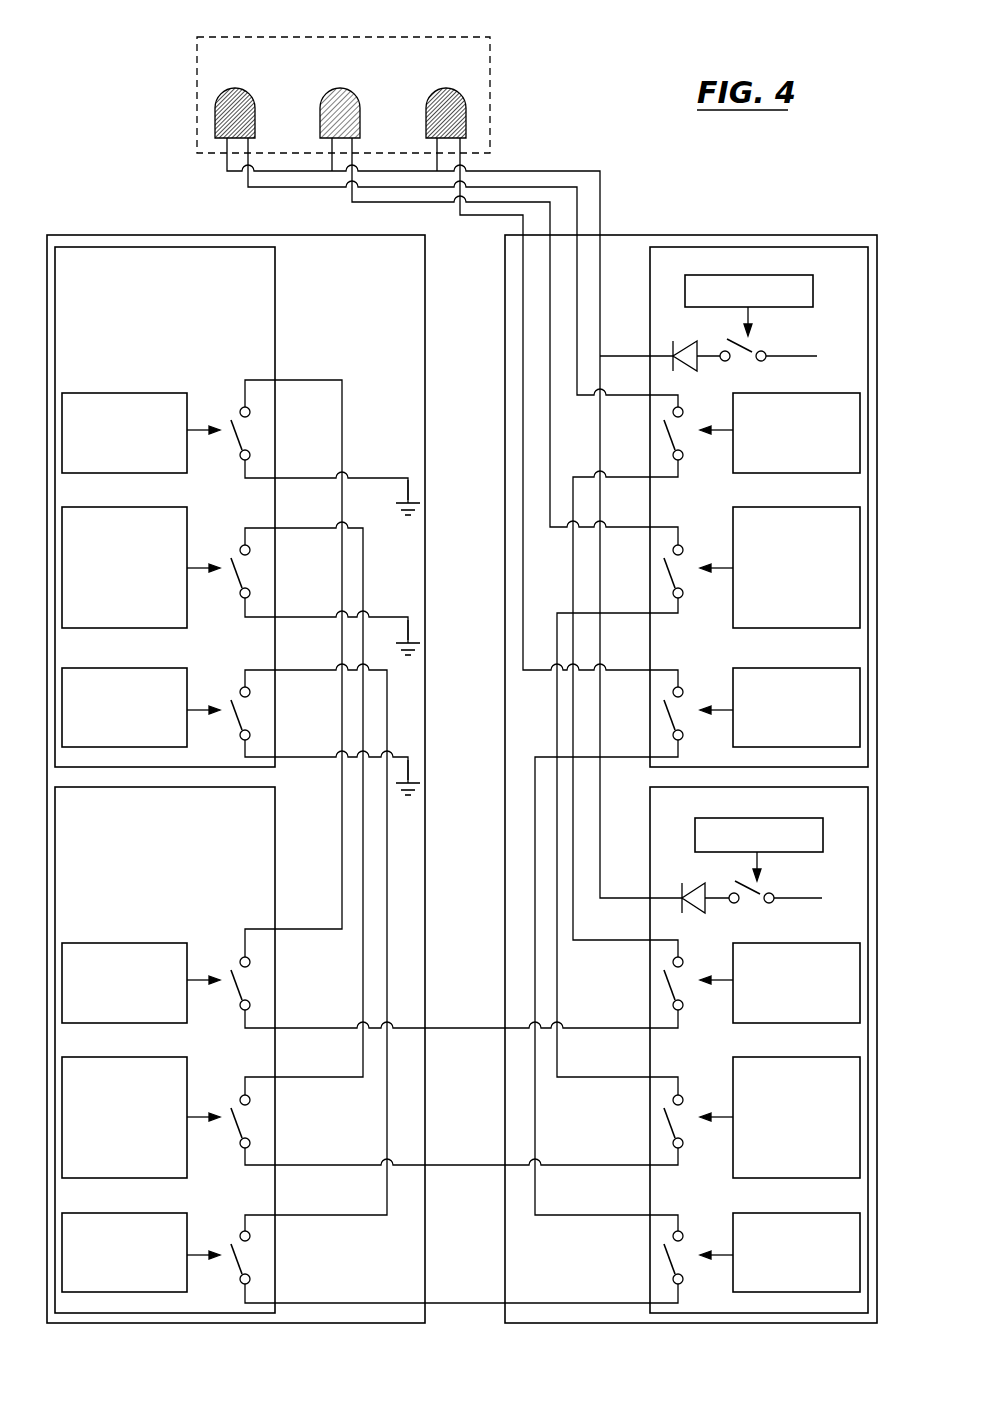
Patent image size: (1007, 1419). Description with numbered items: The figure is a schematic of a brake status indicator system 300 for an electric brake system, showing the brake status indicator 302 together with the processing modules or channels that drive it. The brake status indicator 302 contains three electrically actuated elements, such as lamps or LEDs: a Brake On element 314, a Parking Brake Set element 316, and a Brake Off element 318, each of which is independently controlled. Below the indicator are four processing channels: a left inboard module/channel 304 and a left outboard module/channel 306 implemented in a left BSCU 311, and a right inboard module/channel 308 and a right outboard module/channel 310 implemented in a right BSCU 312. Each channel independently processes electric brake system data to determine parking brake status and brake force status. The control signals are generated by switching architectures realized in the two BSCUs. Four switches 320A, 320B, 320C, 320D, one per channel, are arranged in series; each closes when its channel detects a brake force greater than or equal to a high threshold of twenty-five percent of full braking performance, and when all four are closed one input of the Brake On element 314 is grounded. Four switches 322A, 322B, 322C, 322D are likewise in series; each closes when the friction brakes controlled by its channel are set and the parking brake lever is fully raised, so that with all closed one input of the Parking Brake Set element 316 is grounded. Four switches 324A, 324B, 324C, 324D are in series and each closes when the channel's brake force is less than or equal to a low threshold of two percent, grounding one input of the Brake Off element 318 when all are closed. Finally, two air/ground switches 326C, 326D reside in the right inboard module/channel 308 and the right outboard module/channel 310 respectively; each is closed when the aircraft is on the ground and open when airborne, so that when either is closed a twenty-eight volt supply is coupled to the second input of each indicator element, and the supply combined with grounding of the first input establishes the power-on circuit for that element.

The brake status indicator system 300 is at (105, 52).
The brake status indicator 302 is at (492, 57).
The left inboard module/channel 304 is at (275, 268).
The left outboard module/channel 306 is at (275, 1258).
The right inboard module/channel 308 is at (813, 247).
The right outboard module/channel 310 is at (650, 1262).
The left BSCU 311 is at (425, 243).
The right BSCU 312 is at (760, 235).
The Brake On element 314 is at (215, 118).
The Parking Brake Set element 316 is at (320, 108).
The Brake Off element 318 is at (467, 110).
The switch of switching architecture 320 320A is at (245, 478).
The switch of switching architecture 320 320B is at (245, 1028).
The switch of switching architecture 320 320C is at (672, 479).
The switch of switching architecture 320 320D is at (680, 1028).
The switch of switching architecture 322 322A is at (245, 617).
The switch of switching architecture 322 322B is at (245, 1165).
The switch of switching architecture 322 322C is at (672, 617).
The switch of switching architecture 322 322D is at (678, 1165).
The switch of switching architecture 324 324A is at (245, 760).
The switch of switching architecture 324 324B is at (245, 1305).
The switch of switching architecture 324 324C is at (672, 758).
The switch of switching architecture 324 324D is at (674, 1304).
The switch of switching architecture 326 326C is at (780, 356).
The switch of switching architecture 326 326D is at (793, 898).